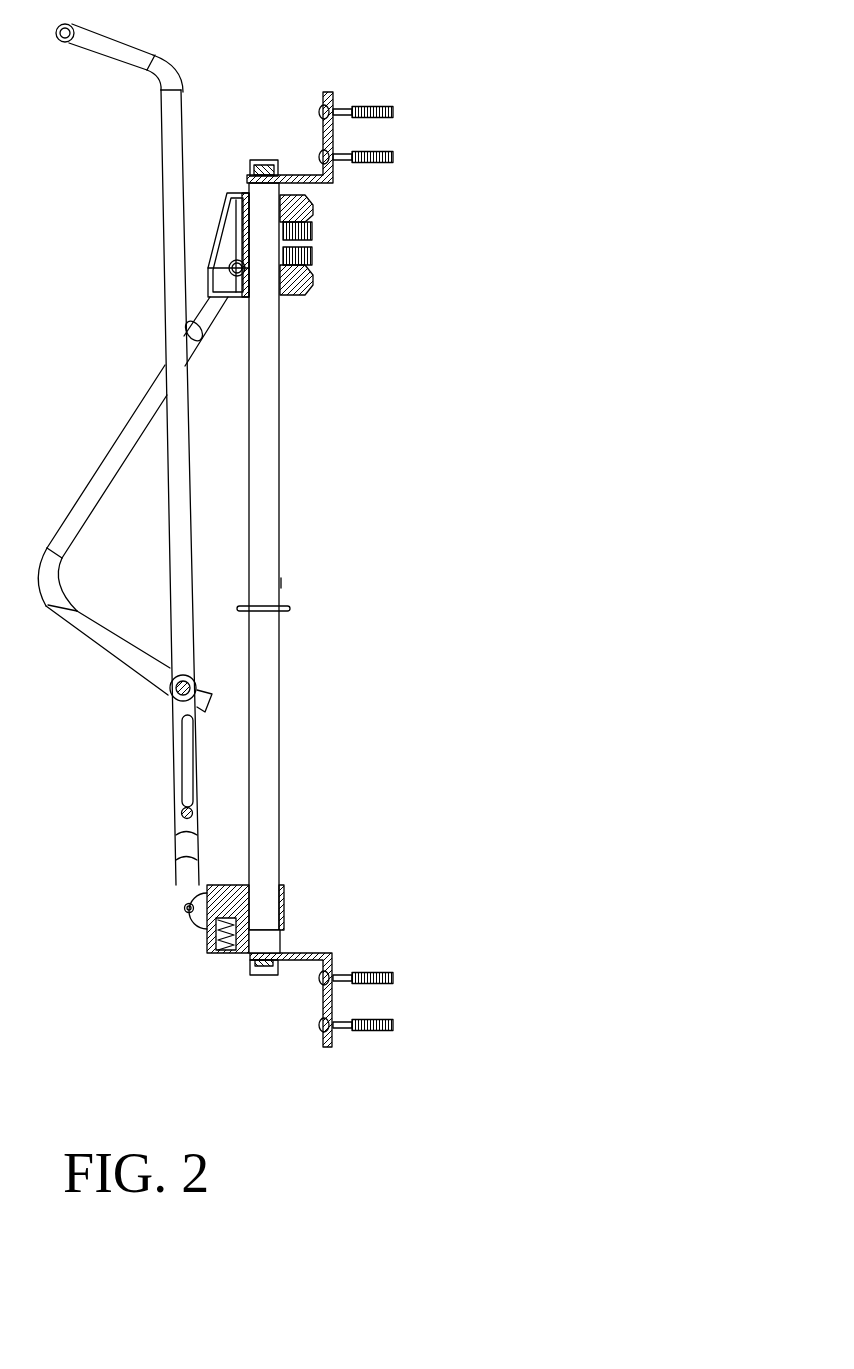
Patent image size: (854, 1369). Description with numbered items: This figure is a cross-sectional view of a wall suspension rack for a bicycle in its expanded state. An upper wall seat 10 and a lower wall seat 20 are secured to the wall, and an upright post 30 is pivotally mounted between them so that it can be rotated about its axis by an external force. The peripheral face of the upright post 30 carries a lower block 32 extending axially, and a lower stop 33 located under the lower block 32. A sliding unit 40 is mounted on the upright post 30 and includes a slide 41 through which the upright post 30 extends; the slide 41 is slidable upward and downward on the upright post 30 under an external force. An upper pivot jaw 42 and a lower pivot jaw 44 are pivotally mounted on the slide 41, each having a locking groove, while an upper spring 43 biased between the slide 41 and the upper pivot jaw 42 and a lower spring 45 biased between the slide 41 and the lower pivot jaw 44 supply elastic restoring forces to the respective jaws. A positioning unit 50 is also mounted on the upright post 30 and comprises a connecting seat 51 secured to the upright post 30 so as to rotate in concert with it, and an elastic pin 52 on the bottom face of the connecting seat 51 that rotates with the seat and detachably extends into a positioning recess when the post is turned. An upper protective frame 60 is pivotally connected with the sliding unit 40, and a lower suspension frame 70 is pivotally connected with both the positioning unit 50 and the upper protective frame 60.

The upper wall seat 10 is at (329, 92).
The lower wall seat 20 is at (327, 1048).
The upright post 30 is at (272, 757).
The lower block 32 is at (284, 588).
The lower stop 33 is at (292, 609).
The sliding unit 40 is at (442, 252).
The slide 41 is at (222, 213).
The upper pivot jaw 42 is at (305, 203).
The upper spring 43 is at (308, 229).
The lower pivot jaw 44 is at (310, 281).
The lower spring 45 is at (310, 258).
The positioning unit 50 is at (162, 924).
The connecting seat 51 is at (205, 897).
The elastic pin 52 is at (203, 938).
The upper protective frame 60 is at (100, 480).
The lower suspension frame 70 is at (178, 758).